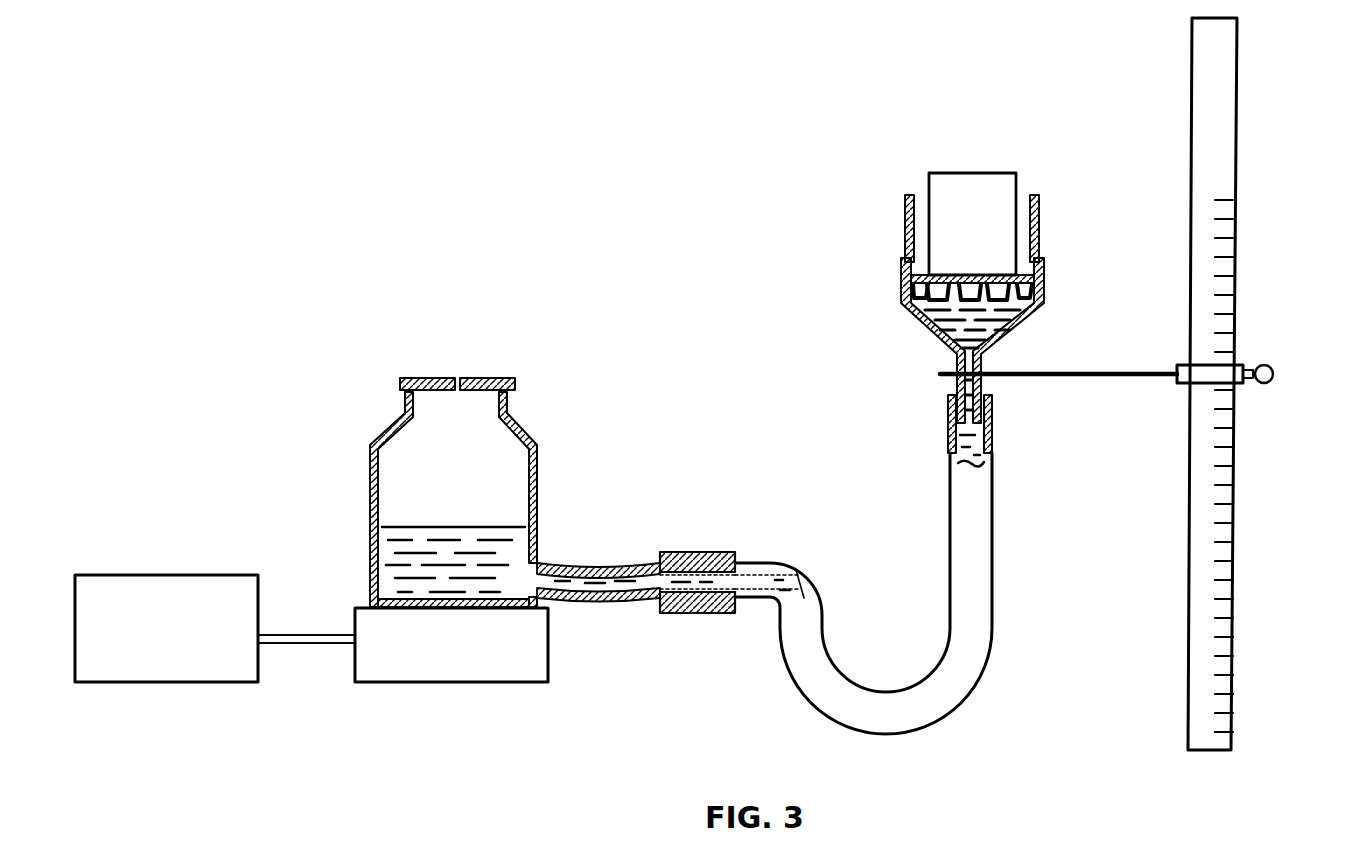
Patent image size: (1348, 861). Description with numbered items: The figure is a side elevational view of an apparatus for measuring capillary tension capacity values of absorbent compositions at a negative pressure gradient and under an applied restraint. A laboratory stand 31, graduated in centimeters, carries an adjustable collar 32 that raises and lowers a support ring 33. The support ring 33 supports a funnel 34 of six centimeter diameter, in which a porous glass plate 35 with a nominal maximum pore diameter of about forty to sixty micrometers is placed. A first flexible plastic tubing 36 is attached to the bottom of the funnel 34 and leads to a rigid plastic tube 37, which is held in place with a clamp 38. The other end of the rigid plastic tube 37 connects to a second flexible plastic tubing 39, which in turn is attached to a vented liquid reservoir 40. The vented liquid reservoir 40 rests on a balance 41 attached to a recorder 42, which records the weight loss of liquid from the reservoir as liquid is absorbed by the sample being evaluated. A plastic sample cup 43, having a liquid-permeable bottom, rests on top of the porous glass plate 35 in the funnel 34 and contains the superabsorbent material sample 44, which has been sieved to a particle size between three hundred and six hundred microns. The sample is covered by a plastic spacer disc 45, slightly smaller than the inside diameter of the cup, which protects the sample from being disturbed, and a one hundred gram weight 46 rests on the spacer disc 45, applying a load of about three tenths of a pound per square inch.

The laboratory stand 31 is at (1237, 186).
The adjustable collar 32 is at (1240, 366).
The support ring 33 is at (1050, 378).
The funnel 34 is at (914, 312).
The porous glass plate 35 is at (1024, 312).
The first flexible plastic tubing 36 is at (980, 672).
The rigid plastic tube 37 is at (675, 615).
The clamp 38 is at (700, 615).
The second flexible plastic tubing 39 is at (607, 600).
The vented liquid reservoir 40 is at (382, 437).
The balance 41 is at (435, 683).
The recorder 42 is at (213, 683).
The plastic sample cup 43 is at (908, 206).
The superabsorbent material sample 44 is at (1003, 290).
The spacer disc 45 is at (1033, 262).
The weight 46 is at (985, 172).